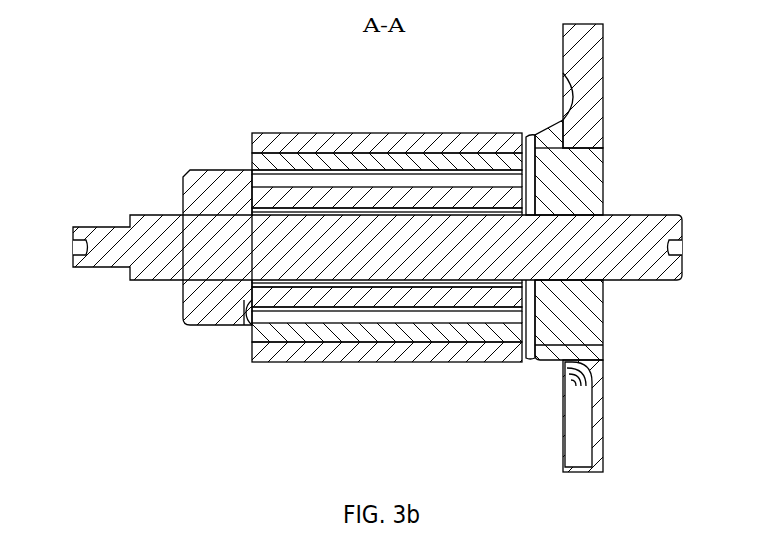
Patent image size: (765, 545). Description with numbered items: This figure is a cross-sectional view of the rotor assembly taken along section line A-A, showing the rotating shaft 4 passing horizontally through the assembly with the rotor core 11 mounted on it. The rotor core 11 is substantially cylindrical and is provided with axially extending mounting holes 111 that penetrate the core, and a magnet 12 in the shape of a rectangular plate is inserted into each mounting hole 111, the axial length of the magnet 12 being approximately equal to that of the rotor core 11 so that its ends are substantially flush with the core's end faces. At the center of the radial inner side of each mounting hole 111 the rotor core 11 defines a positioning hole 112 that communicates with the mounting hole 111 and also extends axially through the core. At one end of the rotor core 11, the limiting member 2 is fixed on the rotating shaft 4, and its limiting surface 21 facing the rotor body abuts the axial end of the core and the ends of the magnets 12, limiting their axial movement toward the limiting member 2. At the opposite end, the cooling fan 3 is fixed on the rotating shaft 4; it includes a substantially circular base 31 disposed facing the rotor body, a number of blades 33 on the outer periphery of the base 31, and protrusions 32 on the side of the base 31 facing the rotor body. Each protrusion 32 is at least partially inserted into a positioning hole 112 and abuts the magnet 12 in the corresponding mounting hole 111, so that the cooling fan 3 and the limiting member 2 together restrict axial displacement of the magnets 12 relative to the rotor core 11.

The limiting member 2 is at (212, 172).
The limiting surface 21 is at (252, 310).
The rotating shaft 4 is at (170, 225).
The rotor core 11 is at (361, 225).
The mounting hole 111 is at (280, 153).
The positioning hole 112 is at (355, 180).
The magnet 12 is at (483, 158).
The cooling fan 3 is at (596, 248).
The base 31 is at (532, 140).
The protrusion 32 is at (512, 318).
The blade 33 is at (565, 97).